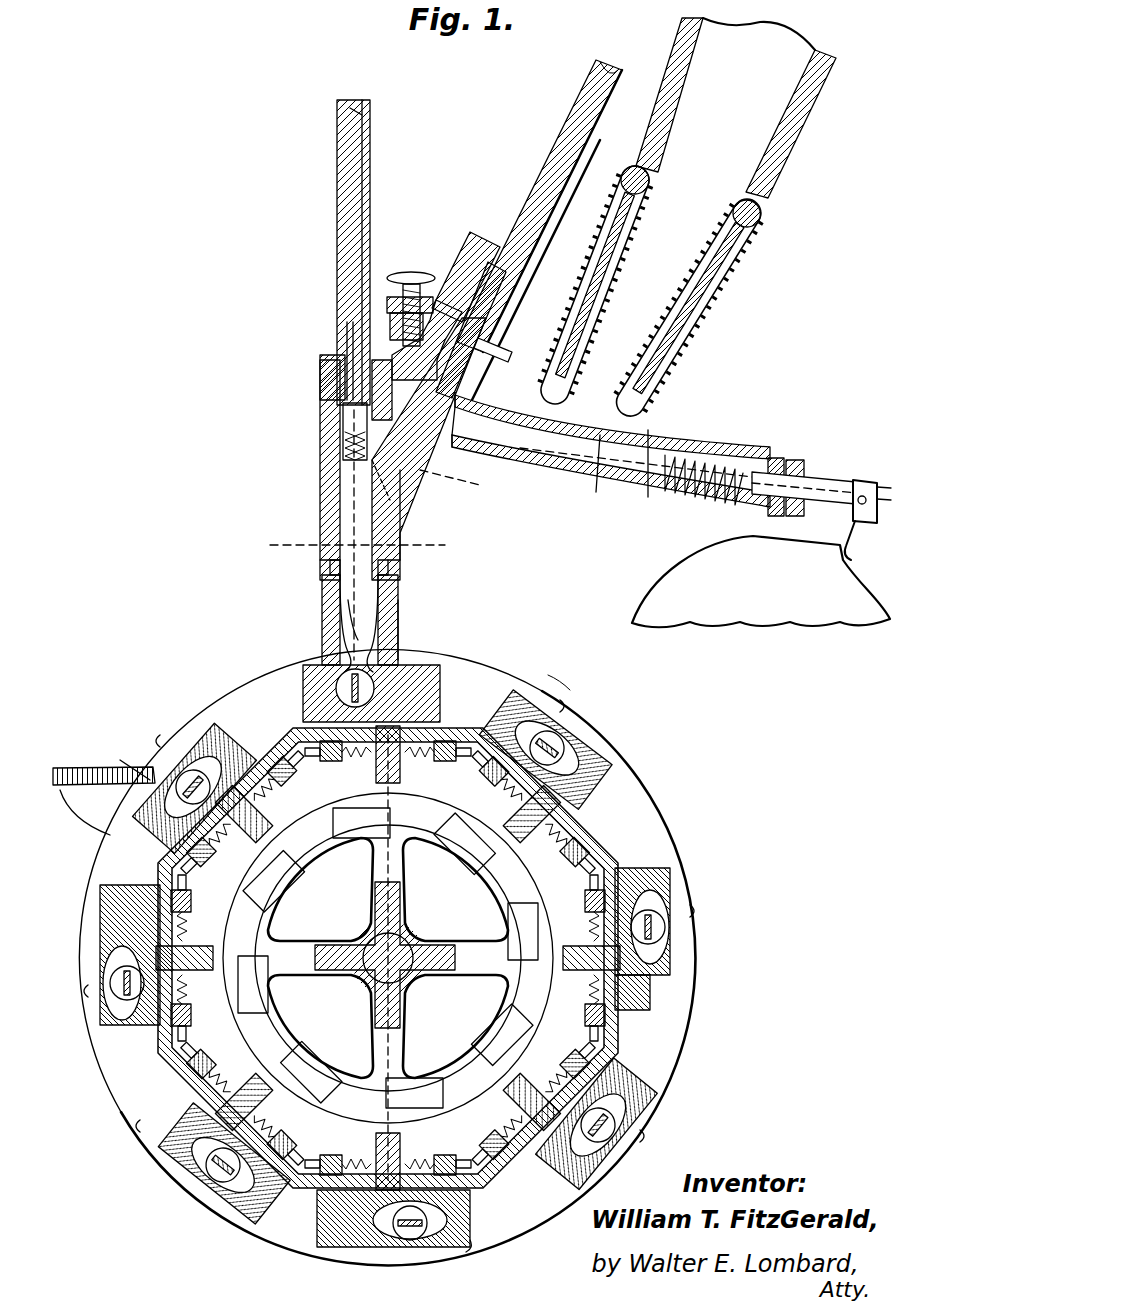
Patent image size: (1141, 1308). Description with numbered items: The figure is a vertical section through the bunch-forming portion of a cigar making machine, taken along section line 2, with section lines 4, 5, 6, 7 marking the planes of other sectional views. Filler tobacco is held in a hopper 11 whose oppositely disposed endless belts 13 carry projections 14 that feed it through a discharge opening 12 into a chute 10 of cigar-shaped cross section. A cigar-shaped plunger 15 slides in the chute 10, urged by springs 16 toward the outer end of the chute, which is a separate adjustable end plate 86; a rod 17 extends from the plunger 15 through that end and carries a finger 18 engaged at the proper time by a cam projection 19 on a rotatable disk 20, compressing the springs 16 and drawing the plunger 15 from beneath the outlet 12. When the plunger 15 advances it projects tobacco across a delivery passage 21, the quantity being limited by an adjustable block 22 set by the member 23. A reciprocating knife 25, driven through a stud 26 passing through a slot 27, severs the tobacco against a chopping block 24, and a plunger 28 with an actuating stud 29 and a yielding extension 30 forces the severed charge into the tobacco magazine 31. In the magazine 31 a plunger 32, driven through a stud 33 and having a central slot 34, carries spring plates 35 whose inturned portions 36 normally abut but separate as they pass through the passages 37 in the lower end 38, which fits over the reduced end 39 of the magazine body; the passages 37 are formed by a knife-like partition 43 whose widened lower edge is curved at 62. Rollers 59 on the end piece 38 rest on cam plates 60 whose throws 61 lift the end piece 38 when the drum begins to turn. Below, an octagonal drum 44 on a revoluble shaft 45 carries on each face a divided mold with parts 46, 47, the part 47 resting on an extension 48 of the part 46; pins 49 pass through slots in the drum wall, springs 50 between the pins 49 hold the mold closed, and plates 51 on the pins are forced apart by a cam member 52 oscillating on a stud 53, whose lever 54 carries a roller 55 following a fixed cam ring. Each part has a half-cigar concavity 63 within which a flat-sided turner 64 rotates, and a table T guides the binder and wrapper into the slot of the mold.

The center line 2 is at (320, 480).
The section line 4- 4 is at (275, 554).
The section line 5- 5 is at (425, 415).
The section line 6- 6 is at (660, 432).
The section line 7- 7 is at (729, 476).
The chute 10 is at (535, 470).
The hopper 11 is at (790, 130).
The discharge opening 12 is at (570, 440).
The endless belts 13 is at (600, 283).
The projections 14 is at (612, 222).
The plunger 15 is at (612, 470).
The springs 16 is at (750, 455).
The rod 17 is at (820, 480).
The finger 18 is at (856, 545).
The cam projection 19 is at (838, 504).
The rotatable disk 20 is at (825, 625).
The delivery passage 21 is at (404, 500).
The adjustable block 22 is at (429, 449).
The adjusting member 23 is at (411, 272).
The chopping block 24 is at (411, 480).
The reciprocating knife 25 is at (470, 378).
The stud 26 is at (508, 352).
The slot 27 is at (510, 300).
The plunger 28 is at (535, 185).
The stud 29 is at (595, 72).
The extension 30 is at (470, 300).
The tobacco magazine 31 is at (320, 420).
The plunger 32 is at (336, 212).
The stud 33 is at (368, 108).
The central slot 34 is at (346, 352).
The spring plates 35 is at (320, 375).
The inturned portions 36 is at (343, 452).
The passages 37 is at (338, 640).
The lower end of magazine 38 is at (398, 585).
The reduced end 39 is at (322, 585).
The partition 43 is at (340, 610).
The rotatable drum 44 is at (690, 818).
The revoluble shaft 45 is at (370, 945).
The mold part 46 is at (409, 945).
The mold part 47 is at (392, 935).
The extension 48 is at (421, 951).
The pins 49 is at (388, 958).
The springs 50 is at (400, 951).
The plate 51 is at (388, 956).
The cam member 52 is at (390, 975).
The short shaft or stud 53 is at (388, 958).
The lever 54 is at (388, 958).
The roller 55 is at (388, 958).
The rollers 59 is at (415, 610).
The cam plates 60 is at (572, 674).
The cam throws 61 is at (389, 938).
The curved lower edge 62 is at (305, 668).
The concavity 63 is at (68, 960).
The turner 64 is at (735, 928).
The outer end plate of chute 86 is at (795, 460).
The table or shelf T is at (68, 768).